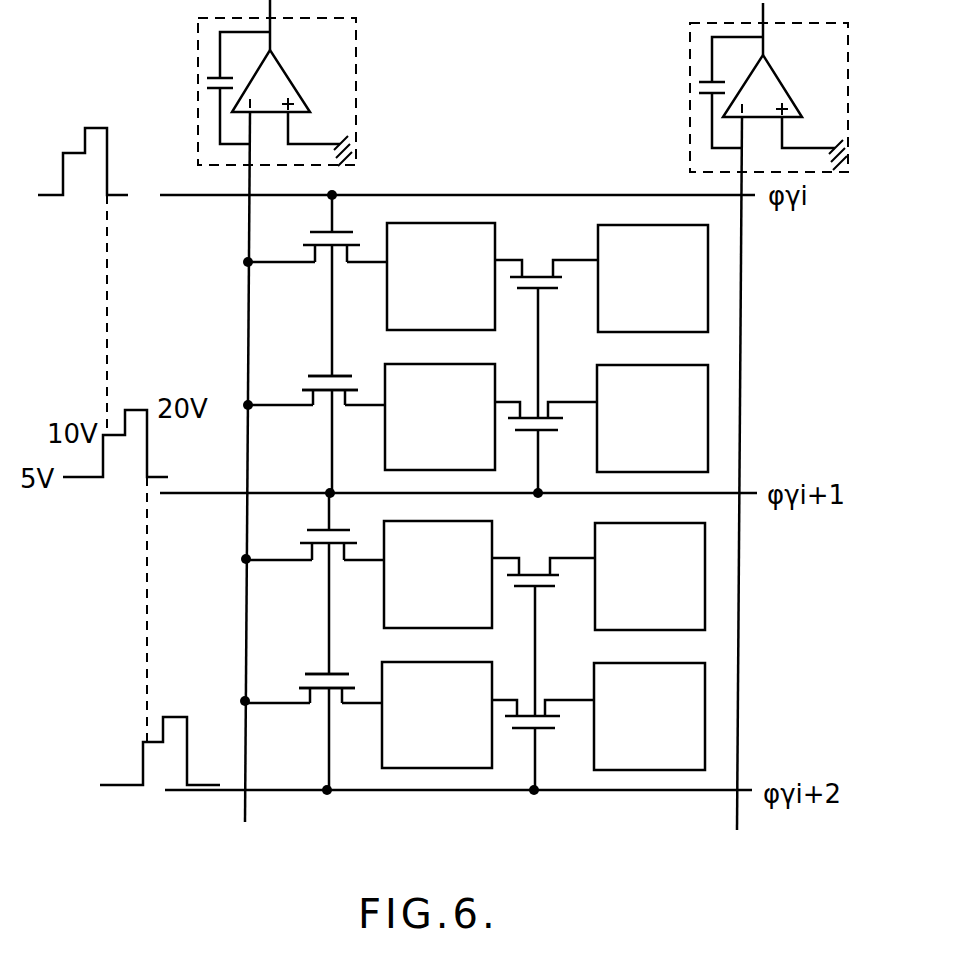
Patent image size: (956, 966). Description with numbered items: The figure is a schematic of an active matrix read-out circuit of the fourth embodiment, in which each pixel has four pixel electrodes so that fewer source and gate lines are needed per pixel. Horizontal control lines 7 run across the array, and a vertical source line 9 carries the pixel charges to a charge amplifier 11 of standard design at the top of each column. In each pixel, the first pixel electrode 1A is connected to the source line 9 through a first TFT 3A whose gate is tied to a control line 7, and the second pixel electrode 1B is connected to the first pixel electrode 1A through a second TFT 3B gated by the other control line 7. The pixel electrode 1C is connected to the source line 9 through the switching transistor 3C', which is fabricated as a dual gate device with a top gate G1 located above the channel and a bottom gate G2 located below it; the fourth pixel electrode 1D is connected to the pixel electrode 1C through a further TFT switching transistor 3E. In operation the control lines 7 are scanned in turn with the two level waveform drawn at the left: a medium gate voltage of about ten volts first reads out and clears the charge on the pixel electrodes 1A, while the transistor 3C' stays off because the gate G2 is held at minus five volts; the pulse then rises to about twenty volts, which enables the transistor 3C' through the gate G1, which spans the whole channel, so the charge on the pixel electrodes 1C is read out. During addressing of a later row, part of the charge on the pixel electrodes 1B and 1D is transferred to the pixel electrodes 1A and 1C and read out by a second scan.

The first pixel electrode 1A is at (439, 425).
The second pixel electrode 1B is at (651, 427).
The second pixel electrode 1C is at (438, 566).
The fourth pixel electrode 1D is at (651, 567).
The first TFT 3A is at (293, 237).
The second TFT 3B is at (545, 556).
The dual gate TFT switching transistor 3C' is at (315, 509).
The TFT switching transistor 3E is at (545, 692).
The top gate G1 is at (338, 374).
The bottom gate G2 is at (335, 407).
The control line 7 is at (437, 196).
The source line 9 is at (245, 818).
The charge amplifier 11 is at (198, 57).